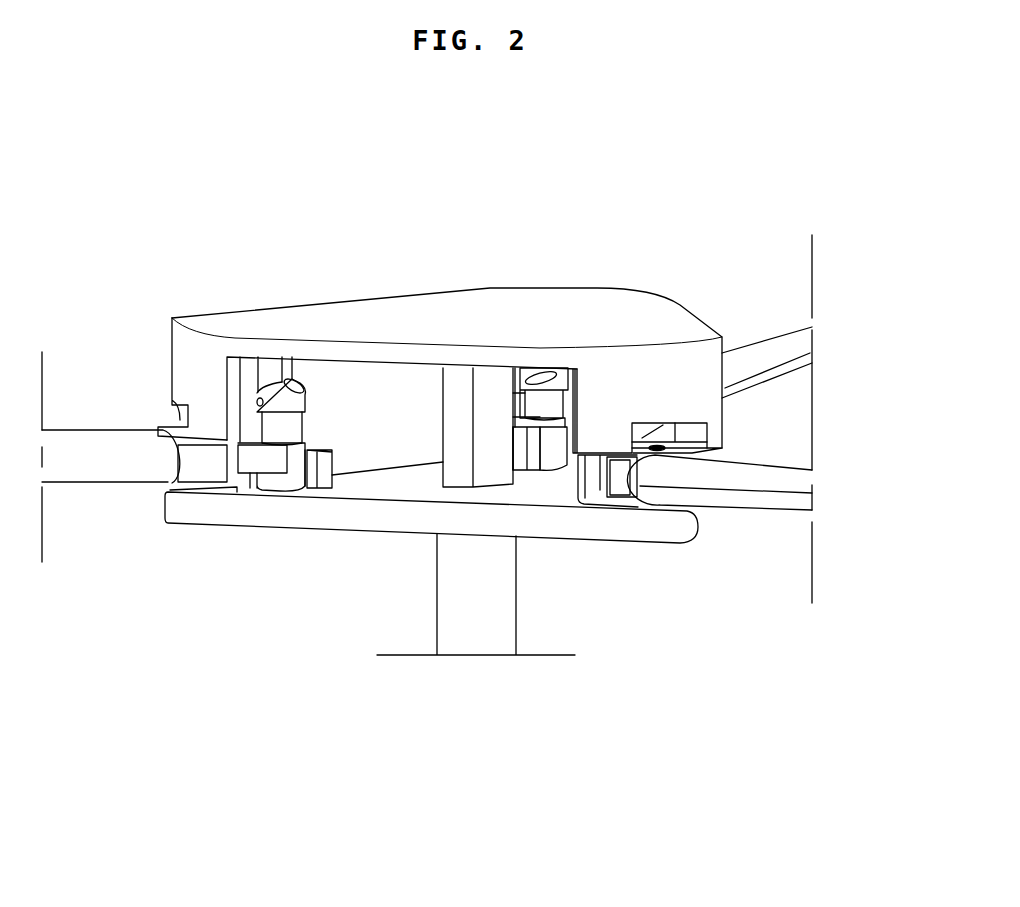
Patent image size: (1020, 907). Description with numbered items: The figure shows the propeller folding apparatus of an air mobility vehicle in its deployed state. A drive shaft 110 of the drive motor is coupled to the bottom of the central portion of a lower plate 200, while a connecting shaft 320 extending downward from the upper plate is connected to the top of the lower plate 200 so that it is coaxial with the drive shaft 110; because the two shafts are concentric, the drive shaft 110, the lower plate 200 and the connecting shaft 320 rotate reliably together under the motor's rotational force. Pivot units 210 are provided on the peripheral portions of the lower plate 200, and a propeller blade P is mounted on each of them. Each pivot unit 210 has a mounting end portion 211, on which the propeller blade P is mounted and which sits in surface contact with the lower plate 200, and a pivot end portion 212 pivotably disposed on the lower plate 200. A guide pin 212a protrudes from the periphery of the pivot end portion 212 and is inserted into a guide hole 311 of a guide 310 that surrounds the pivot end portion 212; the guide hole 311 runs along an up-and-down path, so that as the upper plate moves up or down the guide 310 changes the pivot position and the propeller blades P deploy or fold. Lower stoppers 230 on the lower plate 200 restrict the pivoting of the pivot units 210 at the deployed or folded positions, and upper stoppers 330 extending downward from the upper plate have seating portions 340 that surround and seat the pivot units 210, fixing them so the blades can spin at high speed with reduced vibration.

The drive shaft 110 is at (472, 632).
The lower plate 200 is at (387, 487).
The pivot unit 210 is at (420, 476).
The mounting end portion 211 is at (243, 460).
The pivot end portion 212 is at (295, 463).
The guide pin 212a is at (292, 392).
The lower stopper 230 is at (322, 468).
The guide 310 is at (414, 297).
The guide hole 311 is at (308, 400).
The connecting shaft 320 is at (460, 388).
The upper stopper 330 is at (185, 375).
The seating portion 340 is at (170, 422).
The propeller blade P is at (798, 347).